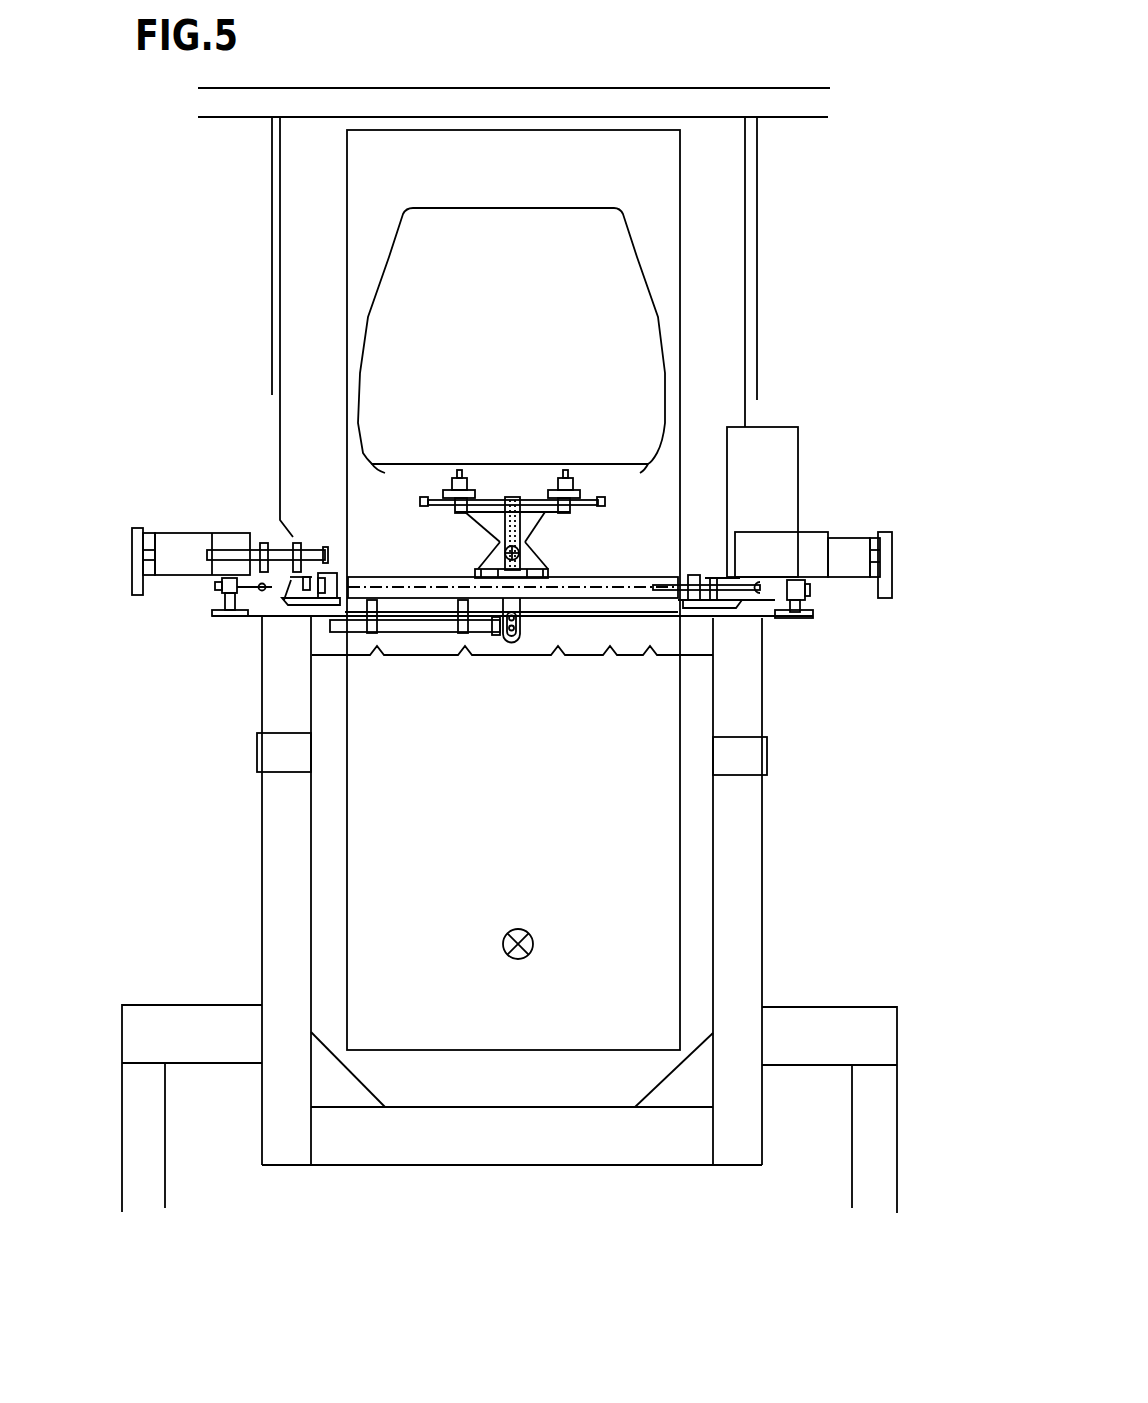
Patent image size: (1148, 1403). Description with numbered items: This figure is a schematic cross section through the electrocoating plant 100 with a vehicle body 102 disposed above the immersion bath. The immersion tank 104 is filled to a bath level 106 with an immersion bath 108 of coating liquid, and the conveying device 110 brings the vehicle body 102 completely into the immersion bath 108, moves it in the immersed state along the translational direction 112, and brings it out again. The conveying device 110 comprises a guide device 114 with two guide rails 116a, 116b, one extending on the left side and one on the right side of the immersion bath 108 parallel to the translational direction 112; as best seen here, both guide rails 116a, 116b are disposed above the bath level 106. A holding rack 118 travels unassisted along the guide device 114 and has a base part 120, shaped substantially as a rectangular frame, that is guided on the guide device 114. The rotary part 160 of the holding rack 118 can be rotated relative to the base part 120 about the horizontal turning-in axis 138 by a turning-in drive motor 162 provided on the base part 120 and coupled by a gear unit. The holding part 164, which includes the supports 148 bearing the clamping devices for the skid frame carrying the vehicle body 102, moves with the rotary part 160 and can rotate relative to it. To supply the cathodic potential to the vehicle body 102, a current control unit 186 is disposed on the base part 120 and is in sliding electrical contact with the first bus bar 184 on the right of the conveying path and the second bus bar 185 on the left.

The electrocoating plant 100 is at (767, 383).
The vehicle body 102 is at (565, 221).
The immersion tank 104 is at (713, 712).
The bath level 106 is at (608, 640).
The immersion bath 108 is at (523, 805).
The conveying device 110 is at (205, 622).
The translational direction 112 is at (525, 928).
The guide device 114 is at (223, 624).
The guide rail 116a is at (210, 604).
The guide rail 116b is at (806, 598).
The holding rack 118 is at (607, 560).
The base part 120 is at (812, 500).
The turning-in axis 138 is at (413, 590).
The support 148 is at (520, 497).
The rotary part 160 is at (548, 603).
The turning-in drive motor 162 is at (773, 542).
The holding part 164 is at (475, 527).
The first bus bar 184 is at (888, 530).
The second bus bar 185 is at (140, 527).
The current control unit 186 is at (773, 445).